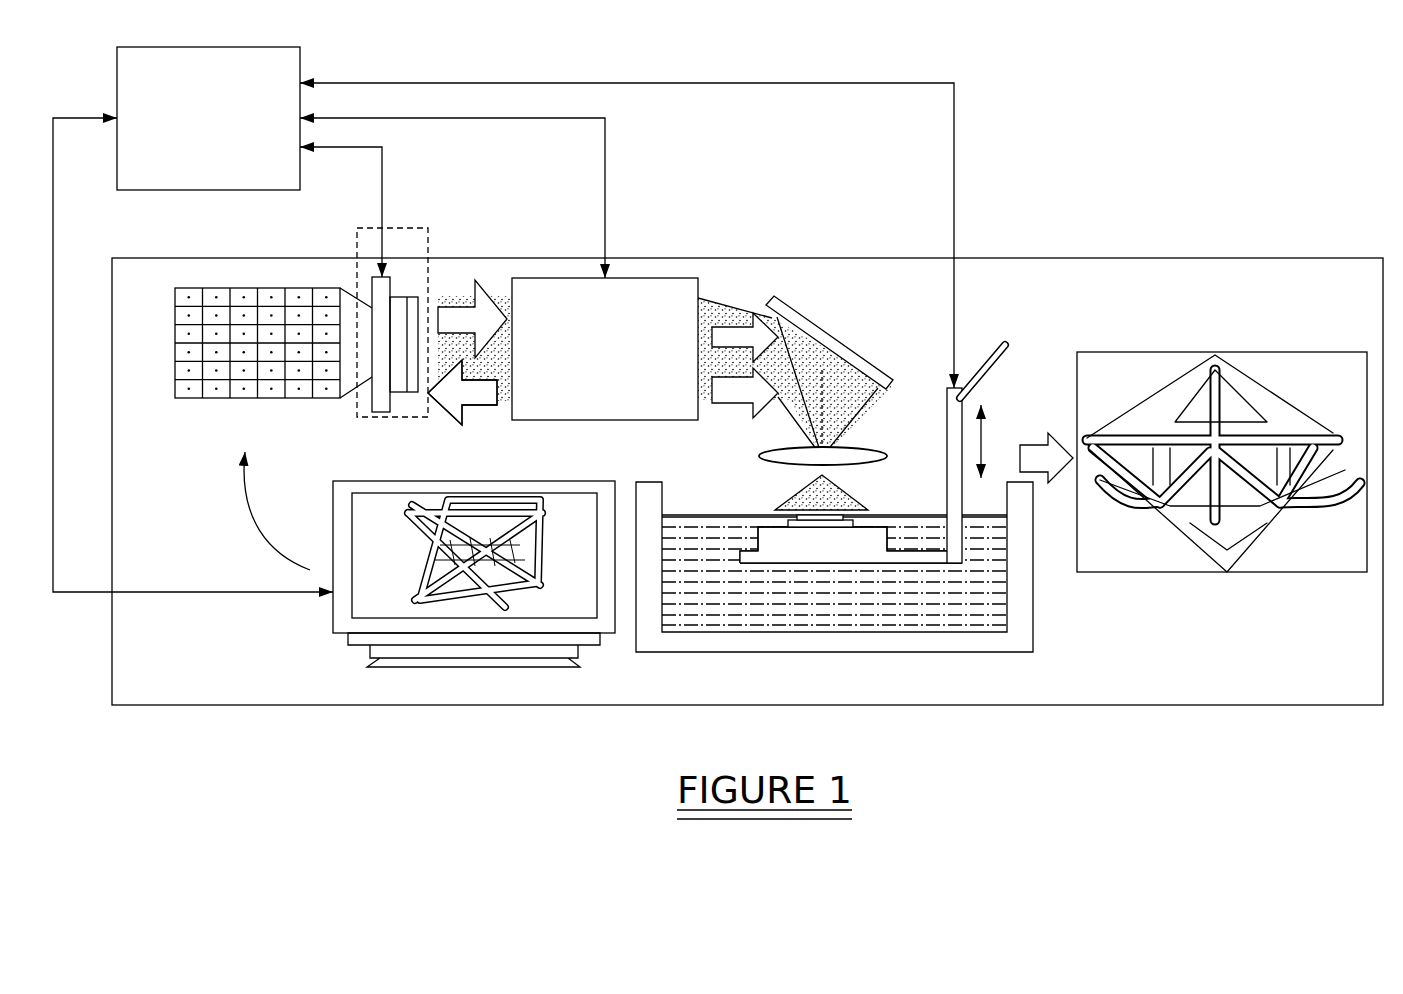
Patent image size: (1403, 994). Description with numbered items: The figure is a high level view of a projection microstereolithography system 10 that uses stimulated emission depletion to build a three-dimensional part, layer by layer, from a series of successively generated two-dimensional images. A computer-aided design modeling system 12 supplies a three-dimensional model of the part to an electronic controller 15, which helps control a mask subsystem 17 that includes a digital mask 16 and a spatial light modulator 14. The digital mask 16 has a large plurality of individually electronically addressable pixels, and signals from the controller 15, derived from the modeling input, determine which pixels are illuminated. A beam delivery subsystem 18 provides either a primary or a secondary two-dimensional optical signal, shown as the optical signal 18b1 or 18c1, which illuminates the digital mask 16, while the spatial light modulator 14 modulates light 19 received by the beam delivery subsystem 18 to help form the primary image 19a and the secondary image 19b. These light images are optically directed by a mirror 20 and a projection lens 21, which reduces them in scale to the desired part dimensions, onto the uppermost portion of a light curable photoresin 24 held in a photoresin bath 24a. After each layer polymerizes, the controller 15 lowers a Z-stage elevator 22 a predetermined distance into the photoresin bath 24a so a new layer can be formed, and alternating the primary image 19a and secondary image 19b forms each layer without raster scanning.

The PuSL system 10 is at (1073, 115).
The 3D CAD modeling system 12 is at (383, 612).
The spatial light modulator 14 is at (400, 300).
The electronic controller 15 is at (196, 151).
The digital mask 16 is at (380, 287).
The mask subsystem 17 is at (428, 228).
The beam delivery subsystem 18 is at (682, 295).
The 2D optical signal 18b1 is at (462, 402).
The 2D optical signal 18c1 is at (462, 392).
The light 19 is at (462, 307).
The primary 2D image 19a is at (727, 333).
The secondary 2D image 19b is at (740, 400).
The mirror 20 is at (812, 337).
The projection lens 21 is at (887, 452).
The Z-stage elevator 22 is at (963, 398).
The photoresin 24 is at (927, 615).
The photoresin bath 24a is at (1033, 612).